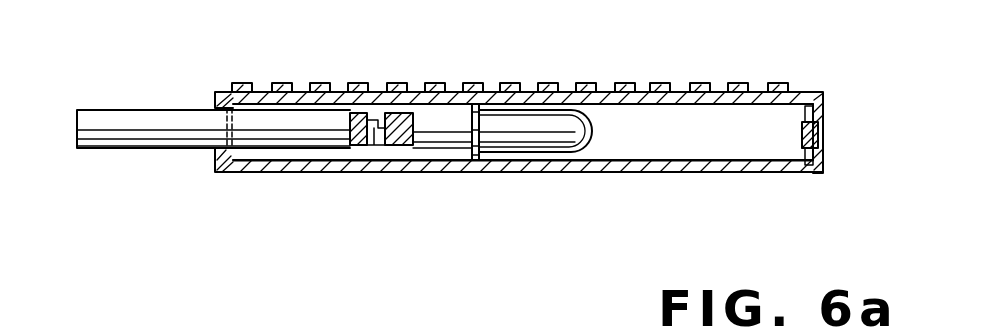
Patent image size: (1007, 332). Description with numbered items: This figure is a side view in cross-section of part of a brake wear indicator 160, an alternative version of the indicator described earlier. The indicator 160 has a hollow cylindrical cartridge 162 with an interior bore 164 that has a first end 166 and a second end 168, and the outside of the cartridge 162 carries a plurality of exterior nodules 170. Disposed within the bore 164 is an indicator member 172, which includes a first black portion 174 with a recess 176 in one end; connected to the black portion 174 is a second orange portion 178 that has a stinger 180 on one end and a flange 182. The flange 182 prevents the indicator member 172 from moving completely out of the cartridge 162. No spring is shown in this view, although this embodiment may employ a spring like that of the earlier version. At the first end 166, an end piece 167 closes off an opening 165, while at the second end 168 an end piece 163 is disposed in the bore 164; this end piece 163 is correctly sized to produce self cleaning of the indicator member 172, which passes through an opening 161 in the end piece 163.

The indicator 160 is at (421, 228).
The opening 161 is at (219, 113).
The hollow cylindrical cartridge 162 is at (633, 168).
The end piece 163 is at (225, 88).
The interior bore 164 is at (688, 152).
The opening 165 is at (825, 133).
The first end 166 is at (802, 174).
The end piece 167 is at (800, 140).
The second end 168 is at (247, 173).
The exterior nodules 170 is at (432, 83).
The indicator member 172 is at (383, 147).
The first black portion 174 is at (168, 131).
The recess 176 is at (371, 150).
The second orange portion 178 is at (548, 128).
The stinger 180 is at (402, 147).
The flange 182 is at (476, 162).